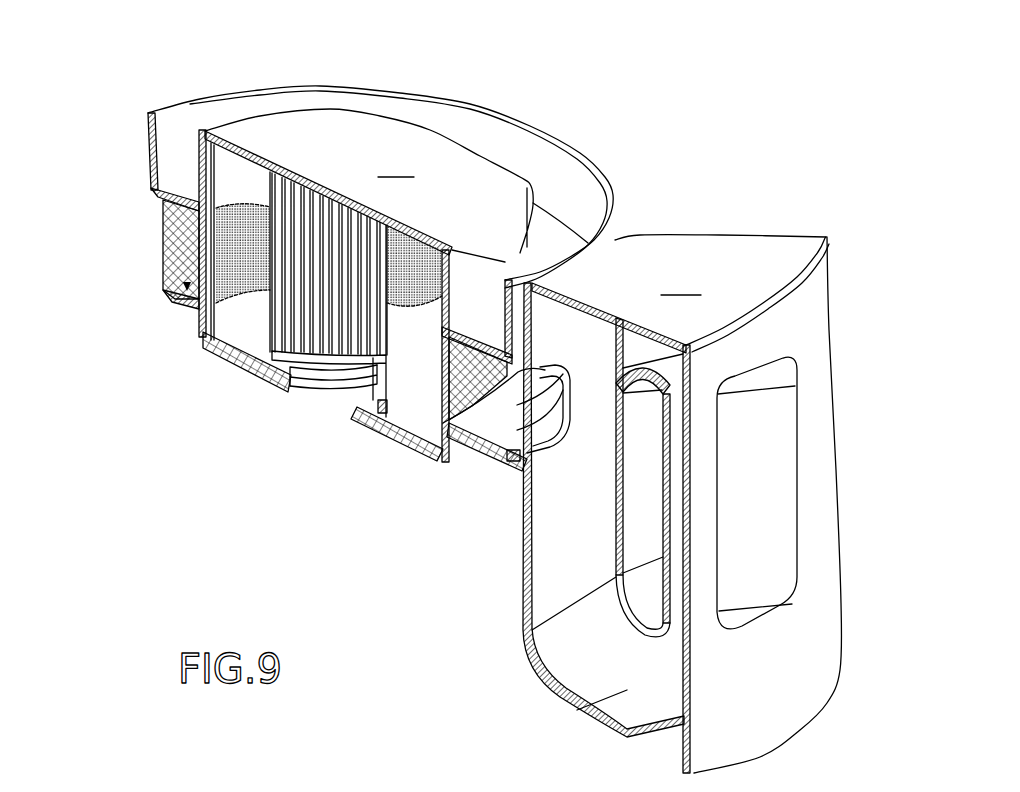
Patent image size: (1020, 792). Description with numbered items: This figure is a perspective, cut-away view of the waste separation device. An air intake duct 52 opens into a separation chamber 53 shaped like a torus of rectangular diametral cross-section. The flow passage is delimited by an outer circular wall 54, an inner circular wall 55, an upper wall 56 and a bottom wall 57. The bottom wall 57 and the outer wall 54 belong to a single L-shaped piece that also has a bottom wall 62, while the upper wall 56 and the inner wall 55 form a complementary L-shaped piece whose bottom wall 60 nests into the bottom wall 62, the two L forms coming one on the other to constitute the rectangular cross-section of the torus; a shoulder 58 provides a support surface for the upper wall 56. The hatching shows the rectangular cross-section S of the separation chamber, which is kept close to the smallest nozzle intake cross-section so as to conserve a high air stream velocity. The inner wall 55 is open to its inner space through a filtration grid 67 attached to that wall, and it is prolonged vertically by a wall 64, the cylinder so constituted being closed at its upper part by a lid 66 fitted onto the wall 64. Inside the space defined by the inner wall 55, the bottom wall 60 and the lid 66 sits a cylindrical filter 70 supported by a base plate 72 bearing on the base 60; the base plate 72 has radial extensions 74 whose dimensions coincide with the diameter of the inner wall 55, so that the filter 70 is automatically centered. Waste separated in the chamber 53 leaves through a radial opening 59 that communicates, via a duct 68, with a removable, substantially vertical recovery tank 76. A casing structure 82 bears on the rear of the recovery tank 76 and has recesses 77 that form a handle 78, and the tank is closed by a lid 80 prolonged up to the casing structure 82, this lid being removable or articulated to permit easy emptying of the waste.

The air intake duct 52 is at (150, 233).
The rectangular cross-section S is at (160, 268).
The separation chamber 53 is at (176, 302).
The outer circular wall 54 is at (160, 275).
The inner circular wall 55 is at (202, 217).
The upper wall 56 is at (470, 324).
The bottom wall 57 is at (485, 430).
The shoulder 58 is at (160, 257).
The radial opening 59 is at (552, 420).
The bottom wall 60 is at (342, 376).
The bottom wall 62 is at (308, 378).
The wall 64 is at (518, 257).
The lid 66 is at (380, 278).
The filtration grid 67 is at (237, 230).
The duct 68 is at (510, 466).
The cylindrical filter 70 is at (273, 306).
The base plate 72 is at (375, 392).
The radial extensions 74 is at (420, 355).
The recovery tank 76 is at (538, 672).
The recesses 77 is at (733, 443).
The handle 78 is at (703, 567).
The lid 80 is at (674, 504).
The casing structure 82 is at (776, 716).